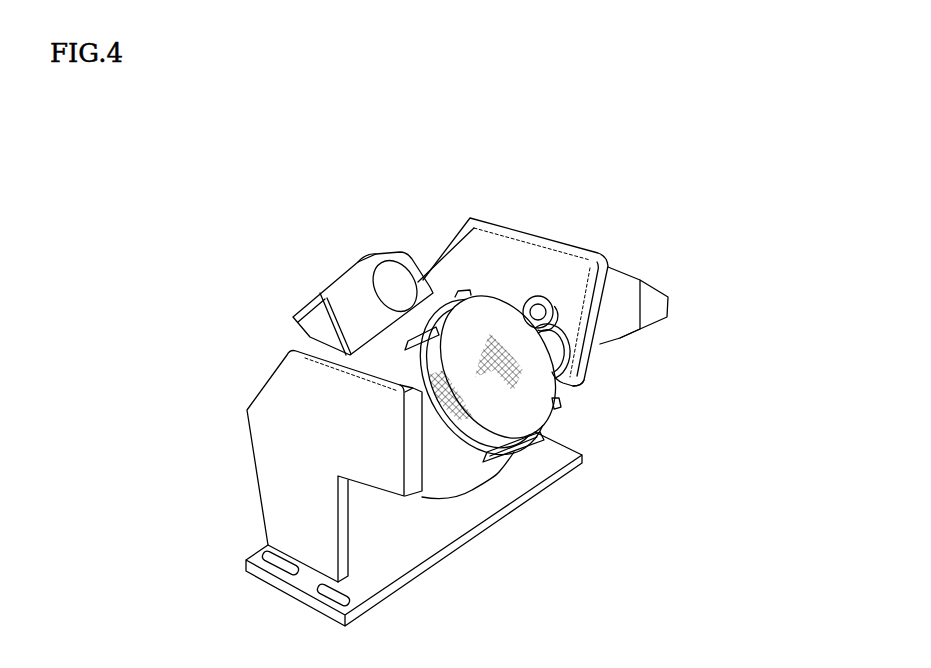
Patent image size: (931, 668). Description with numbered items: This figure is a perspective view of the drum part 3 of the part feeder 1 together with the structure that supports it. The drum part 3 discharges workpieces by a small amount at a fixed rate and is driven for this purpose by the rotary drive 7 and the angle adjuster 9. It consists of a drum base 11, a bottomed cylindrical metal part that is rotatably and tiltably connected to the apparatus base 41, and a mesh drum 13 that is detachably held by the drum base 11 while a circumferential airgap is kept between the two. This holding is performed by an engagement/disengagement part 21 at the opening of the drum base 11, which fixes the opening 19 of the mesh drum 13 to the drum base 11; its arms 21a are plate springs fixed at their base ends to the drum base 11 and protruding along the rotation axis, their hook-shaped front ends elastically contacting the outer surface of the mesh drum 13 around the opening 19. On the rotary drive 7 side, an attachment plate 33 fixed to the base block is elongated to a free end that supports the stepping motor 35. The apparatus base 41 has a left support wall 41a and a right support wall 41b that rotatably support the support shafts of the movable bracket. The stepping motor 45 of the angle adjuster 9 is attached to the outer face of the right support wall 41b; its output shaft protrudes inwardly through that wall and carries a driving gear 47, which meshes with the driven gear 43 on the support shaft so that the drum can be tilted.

The part feeder 1 is at (402, 329).
The drum part 3 is at (402, 338).
The rotary drive 7 is at (322, 251).
The angle adjuster 9 is at (650, 280).
The drum base 11 is at (434, 287).
The mesh drum 13 is at (452, 280).
The opening 19 is at (556, 404).
The engagement/disengagement part 21 is at (402, 340).
The arm 21a is at (405, 348).
The attachment plate 33 is at (308, 304).
The stepping motor 35 is at (372, 254).
The apparatus base 41 is at (582, 445).
The left support wall 41a is at (583, 236).
The right support wall 41b is at (270, 378).
The driven gear 43 is at (593, 387).
The stepping motor 45 is at (620, 334).
The driving gear 47 is at (540, 296).